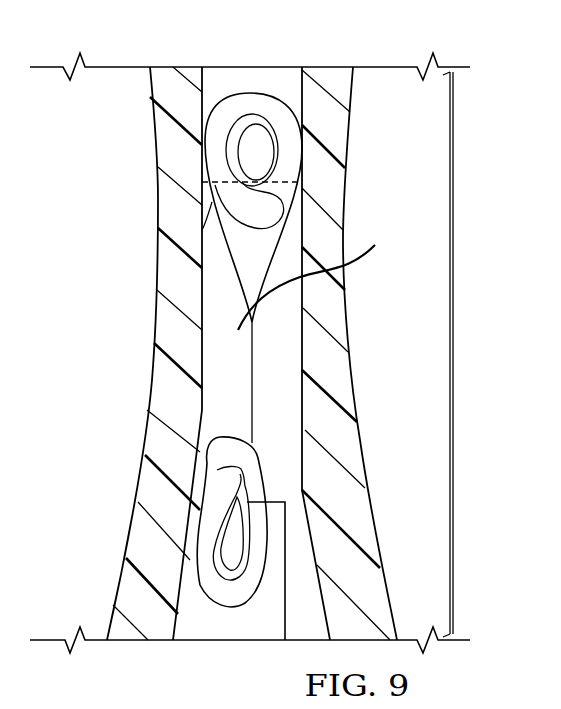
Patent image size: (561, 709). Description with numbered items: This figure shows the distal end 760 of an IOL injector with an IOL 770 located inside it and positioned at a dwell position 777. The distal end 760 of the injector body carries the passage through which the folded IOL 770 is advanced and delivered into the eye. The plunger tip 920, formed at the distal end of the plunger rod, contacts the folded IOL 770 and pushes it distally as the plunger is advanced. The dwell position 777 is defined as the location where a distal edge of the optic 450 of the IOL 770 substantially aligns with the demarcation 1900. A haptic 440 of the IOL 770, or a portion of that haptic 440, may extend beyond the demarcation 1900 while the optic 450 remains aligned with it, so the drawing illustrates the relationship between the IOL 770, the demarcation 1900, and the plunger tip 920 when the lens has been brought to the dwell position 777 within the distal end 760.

The haptic 440 is at (255, 104).
The distal end 760 is at (154, 141).
The demarcation 1900 is at (283, 178).
The optic 450 is at (212, 203).
The IOL 770 is at (319, 271).
The dwell position 777 is at (452, 349).
The plunger tip 920 is at (238, 632).